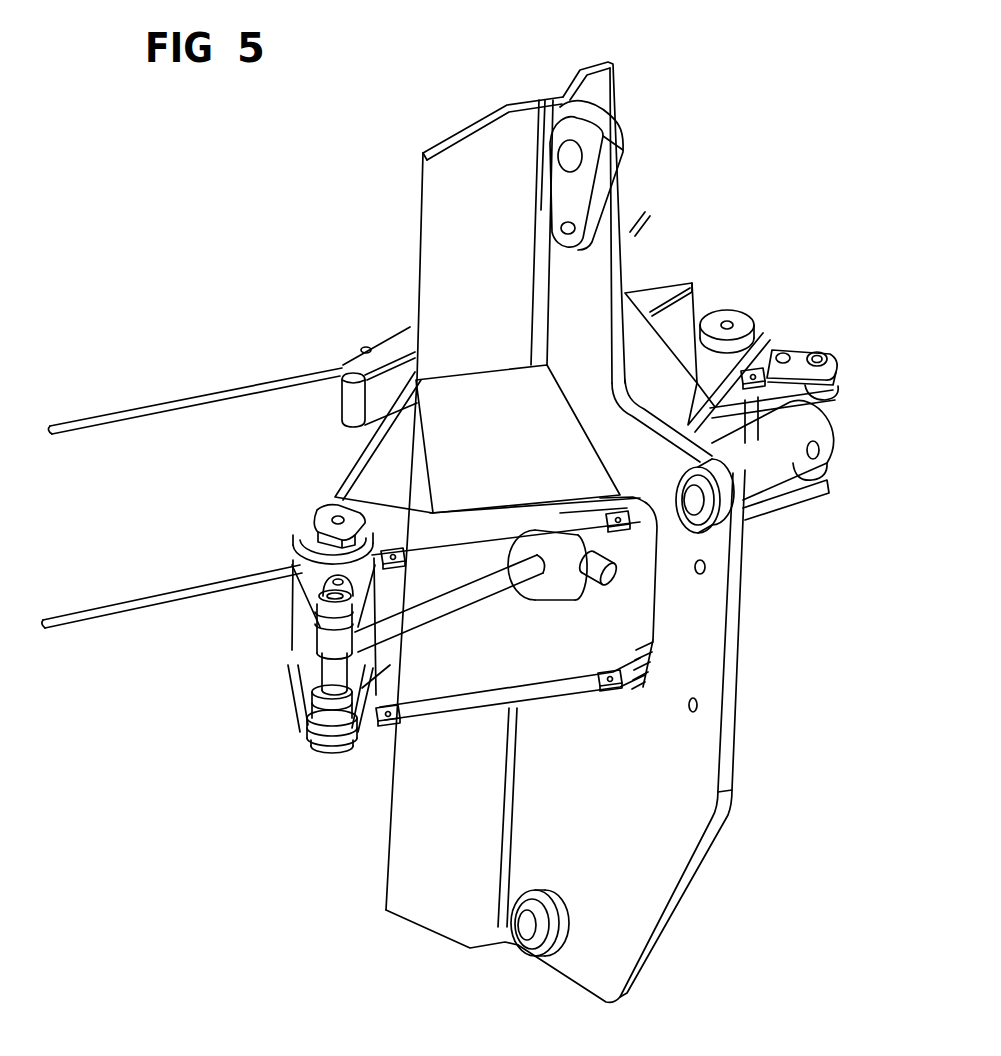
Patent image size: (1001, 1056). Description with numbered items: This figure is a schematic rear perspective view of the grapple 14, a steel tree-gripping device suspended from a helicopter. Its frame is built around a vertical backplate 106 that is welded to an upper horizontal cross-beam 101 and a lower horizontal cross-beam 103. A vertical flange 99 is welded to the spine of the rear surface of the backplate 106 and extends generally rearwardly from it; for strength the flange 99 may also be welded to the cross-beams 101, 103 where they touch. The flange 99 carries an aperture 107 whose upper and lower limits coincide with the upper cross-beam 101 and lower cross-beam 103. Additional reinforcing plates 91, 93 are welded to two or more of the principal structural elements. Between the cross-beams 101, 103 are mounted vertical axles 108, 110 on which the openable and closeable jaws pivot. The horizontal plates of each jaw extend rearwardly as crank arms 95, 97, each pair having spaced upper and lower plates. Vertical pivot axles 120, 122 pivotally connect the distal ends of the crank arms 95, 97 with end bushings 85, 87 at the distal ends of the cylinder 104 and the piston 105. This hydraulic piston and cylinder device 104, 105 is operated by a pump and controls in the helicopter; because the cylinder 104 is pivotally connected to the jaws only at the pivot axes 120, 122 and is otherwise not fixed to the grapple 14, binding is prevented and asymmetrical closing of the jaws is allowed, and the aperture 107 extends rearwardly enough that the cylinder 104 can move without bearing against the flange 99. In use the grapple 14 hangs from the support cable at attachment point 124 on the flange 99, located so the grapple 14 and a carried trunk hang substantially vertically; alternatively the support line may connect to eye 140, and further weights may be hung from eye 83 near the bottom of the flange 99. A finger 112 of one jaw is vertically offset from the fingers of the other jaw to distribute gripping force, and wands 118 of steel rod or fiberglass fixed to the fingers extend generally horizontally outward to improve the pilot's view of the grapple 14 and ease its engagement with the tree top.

The grapple 14 is at (650, 245).
The eye 83 is at (528, 938).
The end bushing 85 is at (827, 408).
The end bushing 87 is at (328, 672).
The reinforcing plate 91 is at (400, 486).
The reinforcing plate 93 is at (510, 431).
The crank arm 95 is at (772, 350).
The crank arm 97 is at (313, 573).
The vertical flange 99 is at (670, 816).
The upper horizontal cross-beam 101 is at (405, 538).
The lower horizontal cross-beam 103 is at (490, 664).
The cylinder 104 is at (620, 546).
The piston 105 is at (423, 622).
The vertical backplate 106 is at (460, 177).
The aperture 107 is at (653, 673).
The vertical axle 108 is at (727, 326).
The vertical axle 110 is at (336, 520).
The finger 112 is at (410, 335).
The wands 118 is at (92, 418).
The vertical pivot axle 120 is at (820, 358).
The vertical pivot axle 122 is at (323, 606).
The attachment point 124 is at (702, 520).
The eye 140 is at (577, 152).